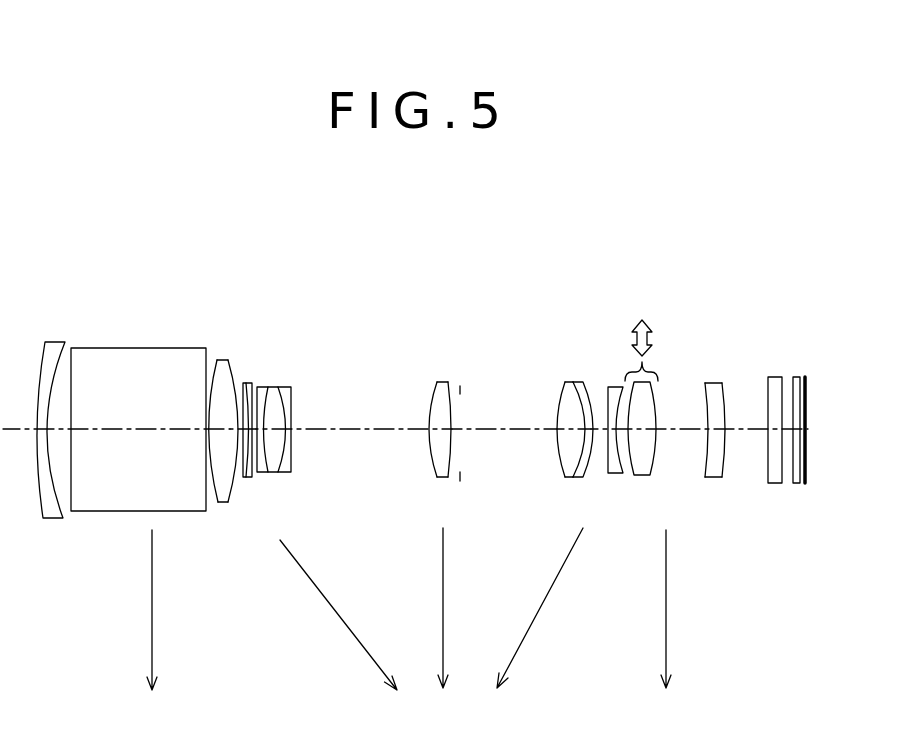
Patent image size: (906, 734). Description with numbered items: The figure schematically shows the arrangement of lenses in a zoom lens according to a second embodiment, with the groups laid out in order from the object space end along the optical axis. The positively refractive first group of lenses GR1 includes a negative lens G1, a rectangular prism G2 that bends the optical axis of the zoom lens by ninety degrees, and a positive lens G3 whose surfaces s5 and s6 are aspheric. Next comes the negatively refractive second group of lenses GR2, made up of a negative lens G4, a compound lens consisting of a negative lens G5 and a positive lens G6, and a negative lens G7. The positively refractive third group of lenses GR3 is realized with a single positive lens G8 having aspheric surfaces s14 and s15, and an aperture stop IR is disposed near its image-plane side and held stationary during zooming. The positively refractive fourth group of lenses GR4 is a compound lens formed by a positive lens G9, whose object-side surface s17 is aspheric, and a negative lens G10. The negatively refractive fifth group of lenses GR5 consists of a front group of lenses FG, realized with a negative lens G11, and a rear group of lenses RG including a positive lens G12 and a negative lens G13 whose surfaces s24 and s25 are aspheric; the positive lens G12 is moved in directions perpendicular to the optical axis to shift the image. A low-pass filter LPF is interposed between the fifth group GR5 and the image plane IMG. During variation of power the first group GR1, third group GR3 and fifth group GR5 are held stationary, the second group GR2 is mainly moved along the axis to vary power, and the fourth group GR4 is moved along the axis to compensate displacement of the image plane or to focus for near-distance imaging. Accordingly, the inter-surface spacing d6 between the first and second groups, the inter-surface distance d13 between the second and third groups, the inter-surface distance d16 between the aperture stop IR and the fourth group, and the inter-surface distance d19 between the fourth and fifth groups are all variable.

The first group of lenses GR1 is at (202, 272).
The second group of lenses GR2 is at (372, 272).
The third group of lenses GR3 is at (475, 272).
The fourth group of lenses GR4 is at (573, 272).
The fifth group of lenses GR5 is at (725, 272).
The negative lens G1 is at (53, 340).
The rectangular prism G2 is at (115, 348).
The positive lens G3 is at (205, 422).
The negative lens G4 is at (245, 383).
The negative lens G5 is at (262, 387).
The positive lens G6 is at (276, 387).
The negative lens G7 is at (290, 387).
The positive lens G8 is at (445, 376).
The positive lens G9 is at (541, 376).
The negative lens G10 is at (583, 383).
The negative lens G11 is at (613, 387).
The positive lens G12 is at (657, 375).
The negative lens G13 is at (715, 376).
The surface s5 is at (210, 375).
The surface s6 is at (236, 498).
The surface s14 is at (430, 403).
The surface s15 is at (452, 416).
The object space-side surface s17 is at (560, 408).
The surface s24 is at (703, 402).
The surface s25 is at (726, 403).
The inter-surface spacing d6 is at (240, 432).
The inter-surface distance d13 is at (347, 432).
The inter-surface distance d16 is at (505, 432).
The inter-surface distance d19 is at (601, 432).
The aperture stop IR is at (460, 378).
The low-pass filter LPF is at (797, 377).
The image plane IMG is at (807, 400).
The front group of lenses FG is at (628, 486).
The rear group of lenses RG is at (722, 486).